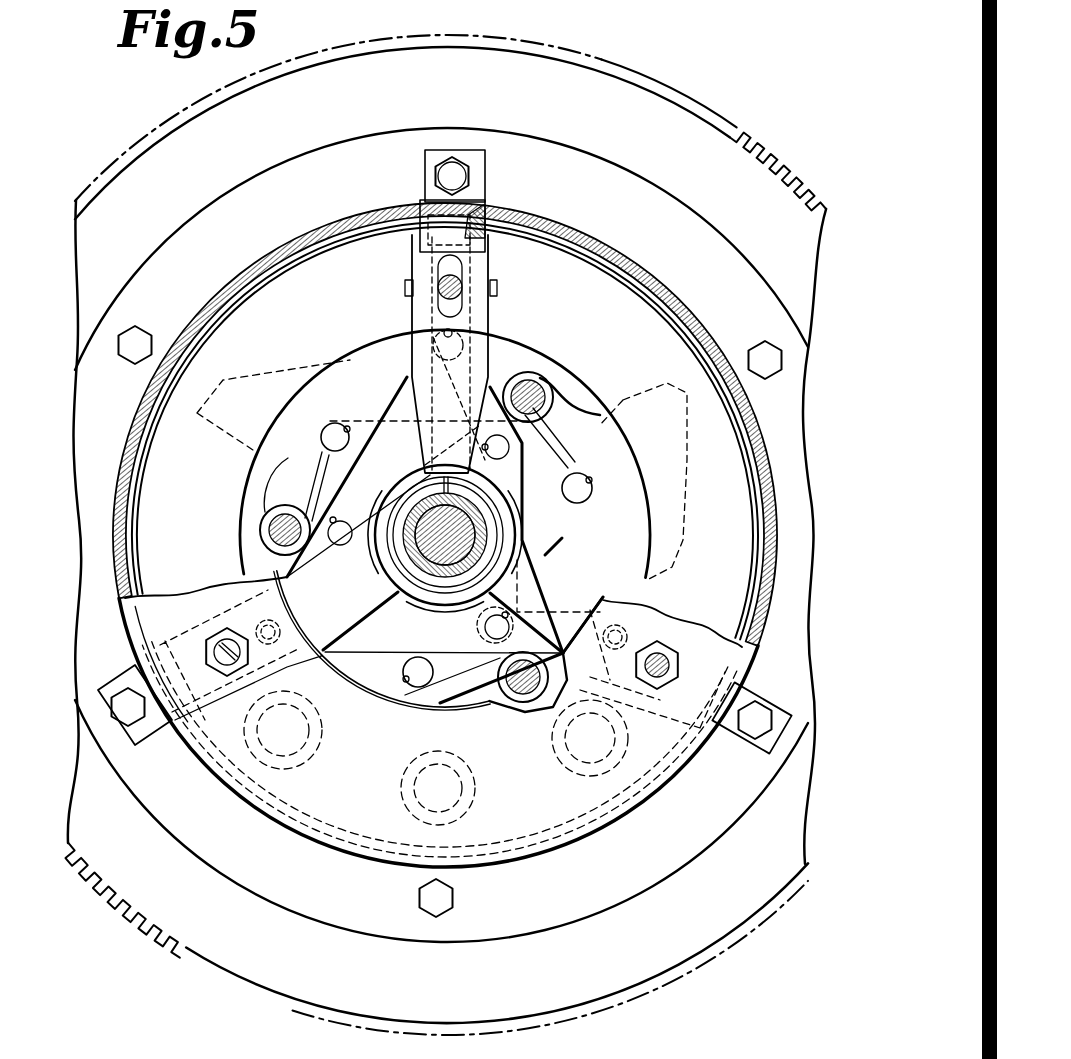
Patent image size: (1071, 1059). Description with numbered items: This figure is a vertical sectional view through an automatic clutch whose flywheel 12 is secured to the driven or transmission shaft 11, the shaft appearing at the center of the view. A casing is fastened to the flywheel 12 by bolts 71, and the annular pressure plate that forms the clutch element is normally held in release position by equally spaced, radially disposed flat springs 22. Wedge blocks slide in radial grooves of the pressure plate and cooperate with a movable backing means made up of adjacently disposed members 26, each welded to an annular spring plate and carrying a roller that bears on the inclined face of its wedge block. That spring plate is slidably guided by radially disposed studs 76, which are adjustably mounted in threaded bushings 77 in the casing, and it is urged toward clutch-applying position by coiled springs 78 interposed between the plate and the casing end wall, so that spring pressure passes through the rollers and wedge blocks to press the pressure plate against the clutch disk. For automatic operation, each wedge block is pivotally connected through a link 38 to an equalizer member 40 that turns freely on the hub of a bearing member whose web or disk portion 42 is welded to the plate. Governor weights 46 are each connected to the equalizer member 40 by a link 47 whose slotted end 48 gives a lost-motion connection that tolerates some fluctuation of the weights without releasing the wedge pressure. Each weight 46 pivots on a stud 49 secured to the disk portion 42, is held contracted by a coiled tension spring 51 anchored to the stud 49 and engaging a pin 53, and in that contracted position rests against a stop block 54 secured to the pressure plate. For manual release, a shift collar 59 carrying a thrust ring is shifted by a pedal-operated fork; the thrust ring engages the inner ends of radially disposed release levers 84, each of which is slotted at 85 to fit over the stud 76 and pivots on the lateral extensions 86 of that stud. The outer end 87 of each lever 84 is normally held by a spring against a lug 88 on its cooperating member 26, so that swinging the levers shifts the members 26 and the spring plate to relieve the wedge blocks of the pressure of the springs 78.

The flywheel 12 is at (243, 950).
The flat springs 22 is at (428, 178).
The bolts 71 is at (456, 170).
The members 26 is at (496, 212).
The web or disk portion 42 is at (570, 387).
The governor weights 46 is at (290, 468).
The stop block 54 is at (412, 258).
The threaded bushings 77 is at (636, 665).
The coiled springs 78 is at (476, 788).
The driven or transmission shaft 11 is at (455, 505).
The equalizer member 40 is at (506, 484).
The levers 84 is at (487, 343).
The lug 88 is at (424, 240).
The outer end 87 is at (486, 246).
The slot 85 is at (462, 270).
The lateral extensions 86 is at (410, 288).
The studs 76 is at (438, 293).
The link 38 is at (492, 385).
The shift collar 59 is at (448, 416).
The stud 49 is at (530, 392).
The coiled tension spring 51 is at (548, 420).
The link 47 is at (395, 425).
The pin 53 is at (333, 437).
The slotted end 48 is at (484, 447).